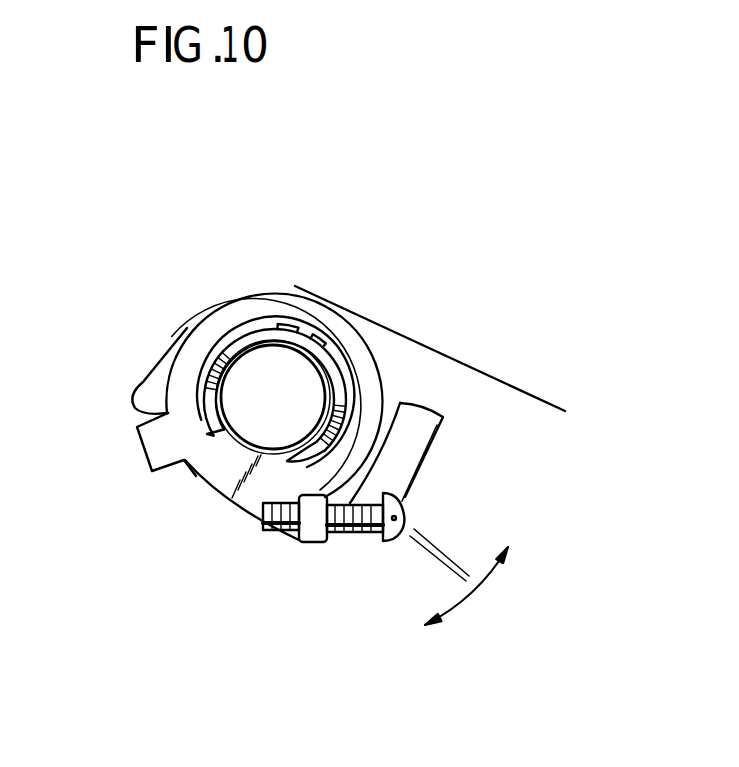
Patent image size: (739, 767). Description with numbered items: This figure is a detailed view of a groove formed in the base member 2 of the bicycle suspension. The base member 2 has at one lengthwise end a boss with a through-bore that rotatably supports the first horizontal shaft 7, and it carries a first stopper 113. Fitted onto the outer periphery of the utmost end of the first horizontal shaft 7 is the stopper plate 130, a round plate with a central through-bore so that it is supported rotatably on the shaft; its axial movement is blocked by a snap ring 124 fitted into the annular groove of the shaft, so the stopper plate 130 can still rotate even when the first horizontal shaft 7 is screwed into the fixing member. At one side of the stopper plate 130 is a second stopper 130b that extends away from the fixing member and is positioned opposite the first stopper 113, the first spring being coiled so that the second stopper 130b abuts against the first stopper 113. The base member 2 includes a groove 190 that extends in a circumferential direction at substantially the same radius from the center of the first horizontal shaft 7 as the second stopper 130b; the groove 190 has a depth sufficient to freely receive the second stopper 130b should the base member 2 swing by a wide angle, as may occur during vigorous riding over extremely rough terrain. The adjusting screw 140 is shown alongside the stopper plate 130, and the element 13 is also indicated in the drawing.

The stopper plate 130 is at (273, 297).
The first stopper 113 is at (145, 383).
The second stopper 130b is at (164, 455).
The first horizontal shaft 7 is at (274, 412).
The snap ring 124 is at (343, 358).
The base member 2 is at (515, 417).
The groove 190 is at (420, 452).
The screw head 13 is at (311, 542).
The adjusting screw 140 is at (362, 533).